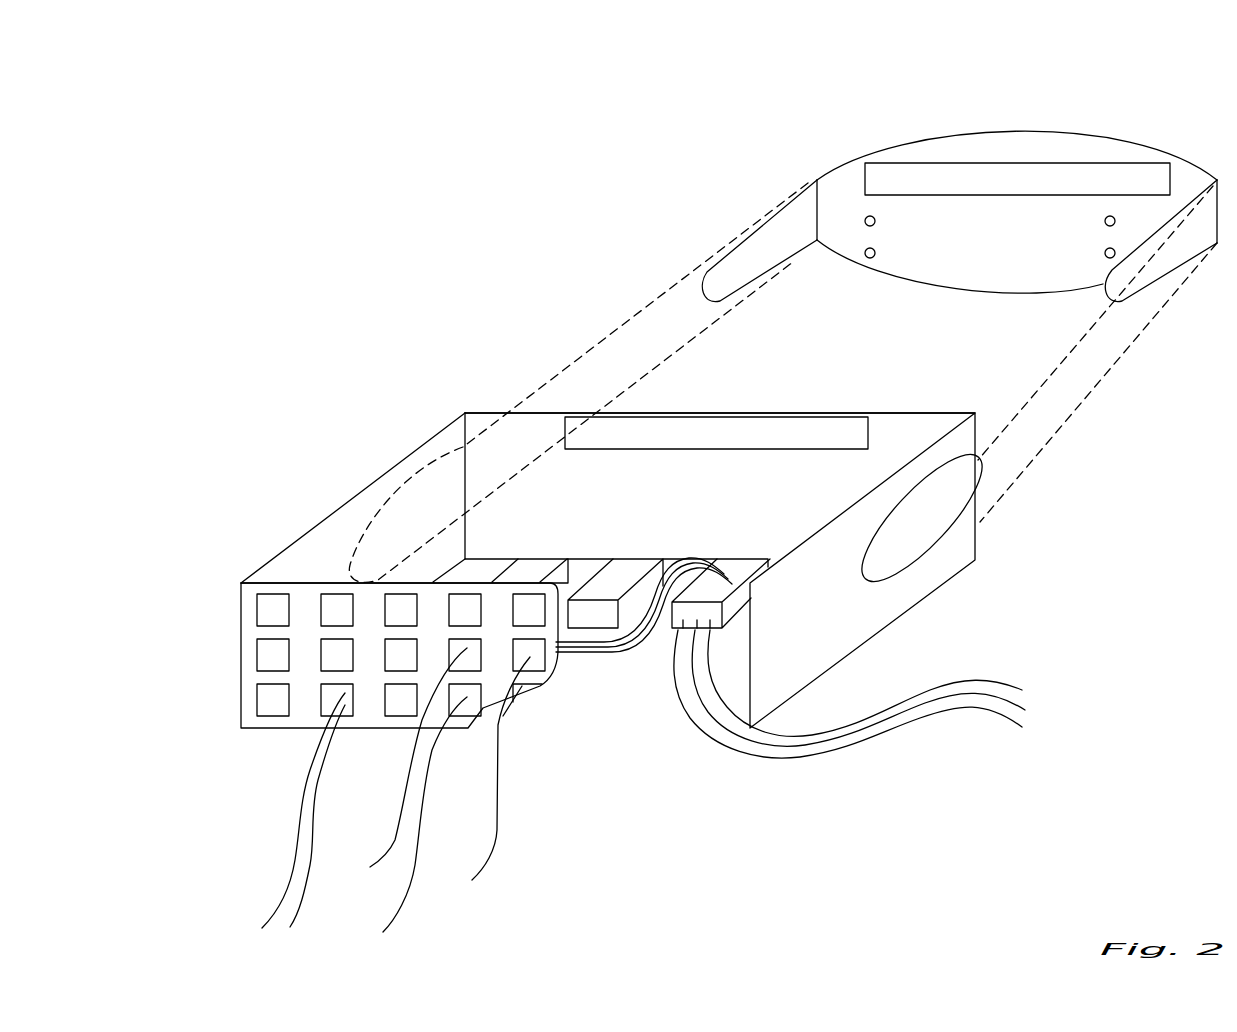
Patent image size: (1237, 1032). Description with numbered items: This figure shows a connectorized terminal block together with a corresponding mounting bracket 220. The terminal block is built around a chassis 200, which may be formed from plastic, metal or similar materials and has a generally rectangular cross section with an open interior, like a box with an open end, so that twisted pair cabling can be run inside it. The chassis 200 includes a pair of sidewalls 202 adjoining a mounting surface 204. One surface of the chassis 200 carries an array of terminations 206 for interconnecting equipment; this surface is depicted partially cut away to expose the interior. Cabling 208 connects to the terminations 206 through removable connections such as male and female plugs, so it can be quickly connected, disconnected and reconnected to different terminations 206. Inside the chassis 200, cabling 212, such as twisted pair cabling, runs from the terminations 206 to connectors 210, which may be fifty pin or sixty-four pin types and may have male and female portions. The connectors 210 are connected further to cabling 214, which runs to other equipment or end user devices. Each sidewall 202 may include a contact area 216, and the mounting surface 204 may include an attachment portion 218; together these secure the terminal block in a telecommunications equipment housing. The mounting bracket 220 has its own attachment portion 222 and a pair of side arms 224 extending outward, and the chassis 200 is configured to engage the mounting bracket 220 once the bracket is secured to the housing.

The chassis 200 is at (369, 426).
The sidewalls 202 is at (899, 596).
The mounting surface 204 is at (914, 411).
The terminations 206 is at (272, 606).
The cabling 208 is at (497, 846).
The connectors 210 is at (594, 635).
The cabling 212 is at (634, 645).
The cabling 214 is at (880, 735).
The contact area 216 is at (956, 522).
The attachment portion 218 is at (748, 411).
The mounting bracket 220 is at (1130, 119).
The attachment portion 222 is at (965, 160).
The side arms 224 is at (780, 251).